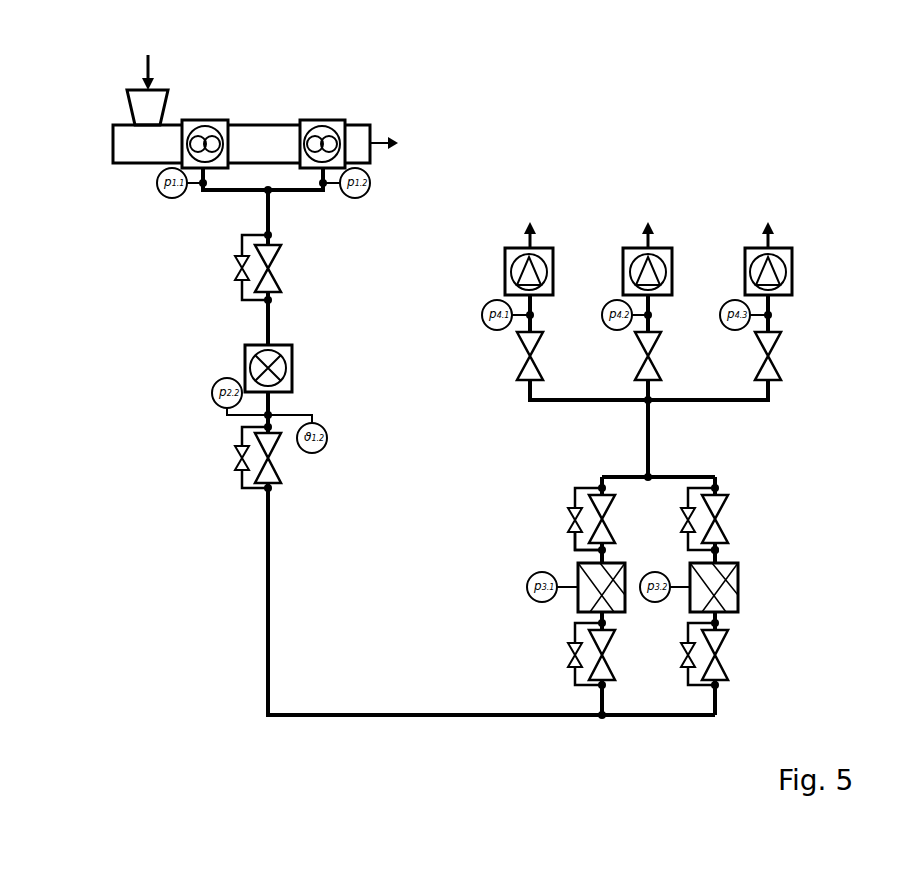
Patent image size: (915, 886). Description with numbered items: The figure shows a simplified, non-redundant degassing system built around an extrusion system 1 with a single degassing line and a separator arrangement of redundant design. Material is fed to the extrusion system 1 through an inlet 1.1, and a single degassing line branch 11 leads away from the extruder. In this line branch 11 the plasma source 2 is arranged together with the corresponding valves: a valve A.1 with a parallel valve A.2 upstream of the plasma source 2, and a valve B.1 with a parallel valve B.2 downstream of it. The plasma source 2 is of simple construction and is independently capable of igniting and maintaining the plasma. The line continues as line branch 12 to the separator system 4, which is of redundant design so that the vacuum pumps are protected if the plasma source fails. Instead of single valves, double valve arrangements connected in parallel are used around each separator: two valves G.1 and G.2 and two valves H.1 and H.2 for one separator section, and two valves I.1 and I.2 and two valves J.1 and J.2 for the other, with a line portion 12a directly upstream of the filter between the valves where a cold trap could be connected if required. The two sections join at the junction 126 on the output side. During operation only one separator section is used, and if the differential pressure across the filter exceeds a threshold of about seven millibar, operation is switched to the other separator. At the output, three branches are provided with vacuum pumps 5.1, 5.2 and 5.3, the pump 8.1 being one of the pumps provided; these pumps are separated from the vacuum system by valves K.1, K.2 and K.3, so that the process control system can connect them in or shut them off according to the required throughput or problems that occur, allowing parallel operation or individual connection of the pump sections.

The extrusion system 1 is at (263, 140).
The feed hopper 1.1 is at (125, 105).
The line branch 11 is at (262, 210).
The shut-off valve A.1 is at (284, 268).
The bypass valve A.2 is at (233, 268).
The plasma source 2 is at (243, 368).
The shut-off valve B.1 is at (284, 458).
The bypass valve B.2 is at (233, 458).
The vacuum pump 5.1 is at (556, 270).
The vacuum pump 5.2 is at (675, 270).
The vacuum pump 5.3 is at (795, 270).
The pump 8.1 is at (496, 259).
The valve K.1 is at (545, 356).
The valve K.2 is at (663, 356).
The valve K.3 is at (783, 356).
The valve J.1 is at (652, 430).
The valve J.2 is at (679, 520).
The junction 126 is at (720, 556).
The separator system 4 is at (740, 588).
The valve H.1 is at (617, 520).
The valve H.2 is at (566, 520).
The line portion 12a is at (573, 545).
The valve G.1 is at (617, 655).
The valve G.2 is at (566, 655).
The valve I.1 is at (730, 655).
The valve I.2 is at (679, 655).
The line branch 12 is at (375, 719).